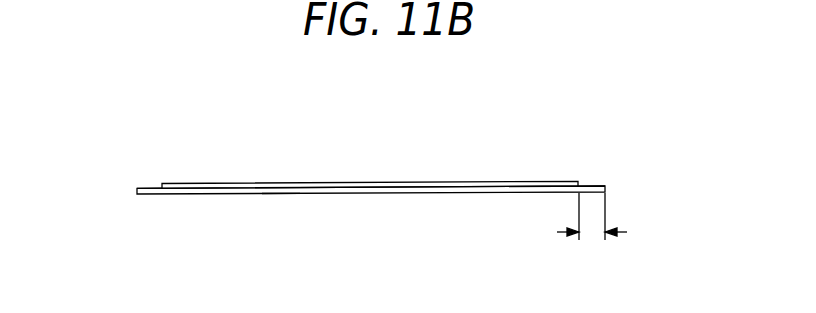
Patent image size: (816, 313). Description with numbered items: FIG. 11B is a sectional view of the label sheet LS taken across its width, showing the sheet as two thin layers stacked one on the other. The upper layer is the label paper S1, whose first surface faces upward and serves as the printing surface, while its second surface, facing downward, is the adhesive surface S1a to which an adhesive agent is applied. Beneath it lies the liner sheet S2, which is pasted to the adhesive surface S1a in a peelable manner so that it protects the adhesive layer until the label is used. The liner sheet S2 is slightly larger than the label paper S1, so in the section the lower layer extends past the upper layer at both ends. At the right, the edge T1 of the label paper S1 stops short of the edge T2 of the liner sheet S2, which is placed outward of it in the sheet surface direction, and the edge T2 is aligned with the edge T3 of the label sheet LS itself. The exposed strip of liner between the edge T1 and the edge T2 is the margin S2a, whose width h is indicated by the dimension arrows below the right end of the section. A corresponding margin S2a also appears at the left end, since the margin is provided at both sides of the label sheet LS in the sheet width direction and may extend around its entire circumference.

The label sheet LS is at (460, 94).
The edge of the label paper T1 is at (587, 180).
The label paper S1 is at (387, 182).
The edge of the liner sheet T2 is at (605, 189).
The edge of the label sheet T3 is at (383, 151).
The liner sheet S2 is at (443, 190).
The margin S2a is at (150, 187).
The adhesive surface S1a is at (271, 192).
The width of the margin h is at (592, 232).